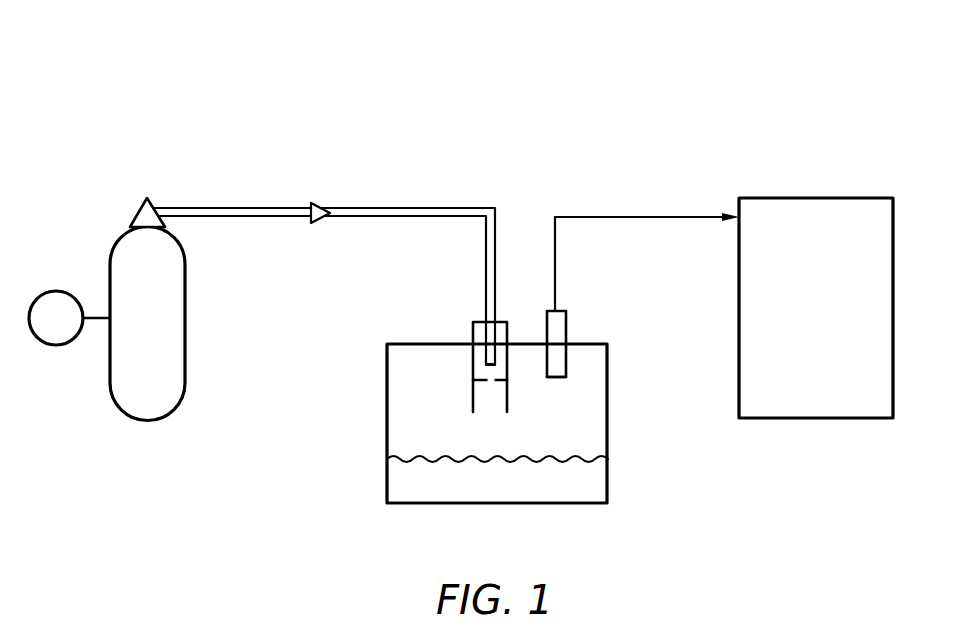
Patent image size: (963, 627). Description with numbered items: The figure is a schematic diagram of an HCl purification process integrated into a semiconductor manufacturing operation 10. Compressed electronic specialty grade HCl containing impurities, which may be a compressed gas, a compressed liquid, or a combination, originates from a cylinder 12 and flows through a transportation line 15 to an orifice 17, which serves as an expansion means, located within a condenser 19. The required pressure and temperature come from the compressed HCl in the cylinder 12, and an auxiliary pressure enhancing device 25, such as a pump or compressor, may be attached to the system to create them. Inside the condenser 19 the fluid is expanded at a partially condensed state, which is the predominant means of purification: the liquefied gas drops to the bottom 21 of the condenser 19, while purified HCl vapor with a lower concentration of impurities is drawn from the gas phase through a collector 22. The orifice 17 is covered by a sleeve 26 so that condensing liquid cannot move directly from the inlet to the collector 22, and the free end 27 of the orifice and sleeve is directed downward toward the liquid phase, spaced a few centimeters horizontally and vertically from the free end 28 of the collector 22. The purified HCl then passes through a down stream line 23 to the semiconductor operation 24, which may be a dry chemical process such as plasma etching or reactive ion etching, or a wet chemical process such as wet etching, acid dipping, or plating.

The semiconductor manufacturing operation 10 is at (561, 70).
The cylinder 12 is at (112, 378).
The transportation line 15 is at (192, 207).
The orifice 17 is at (496, 382).
The condenser 19 is at (396, 397).
The bottom 21 is at (467, 500).
The collector 22 is at (567, 327).
The down stream line 23 is at (623, 216).
The semiconductor operation 24 is at (803, 419).
The auxiliary pressure enhancing device 25 is at (52, 290).
The sleeve 26 is at (470, 366).
The free end of the orifice/sleeve 27 is at (491, 405).
The free end of the collector 28 is at (565, 380).